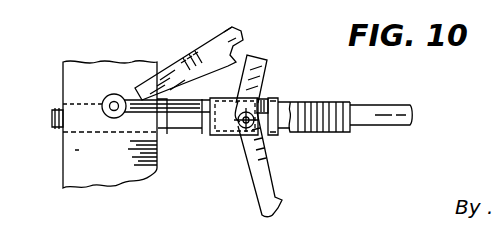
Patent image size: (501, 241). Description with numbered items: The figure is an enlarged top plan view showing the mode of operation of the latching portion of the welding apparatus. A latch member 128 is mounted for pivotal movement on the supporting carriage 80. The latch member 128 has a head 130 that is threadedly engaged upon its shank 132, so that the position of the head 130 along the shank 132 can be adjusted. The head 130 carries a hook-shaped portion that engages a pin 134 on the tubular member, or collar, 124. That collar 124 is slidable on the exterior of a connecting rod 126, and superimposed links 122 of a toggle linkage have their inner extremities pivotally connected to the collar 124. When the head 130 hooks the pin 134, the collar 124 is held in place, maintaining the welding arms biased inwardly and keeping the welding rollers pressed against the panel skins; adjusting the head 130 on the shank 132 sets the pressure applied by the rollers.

The supporting carriage 80 is at (70, 152).
The links 122 is at (253, 60).
The tubular member 124 is at (280, 136).
The connecting rod 126 is at (320, 100).
The latch member 128 is at (167, 63).
The head 130 is at (212, 46).
The shank 132 is at (138, 76).
The pin 134 is at (245, 128).